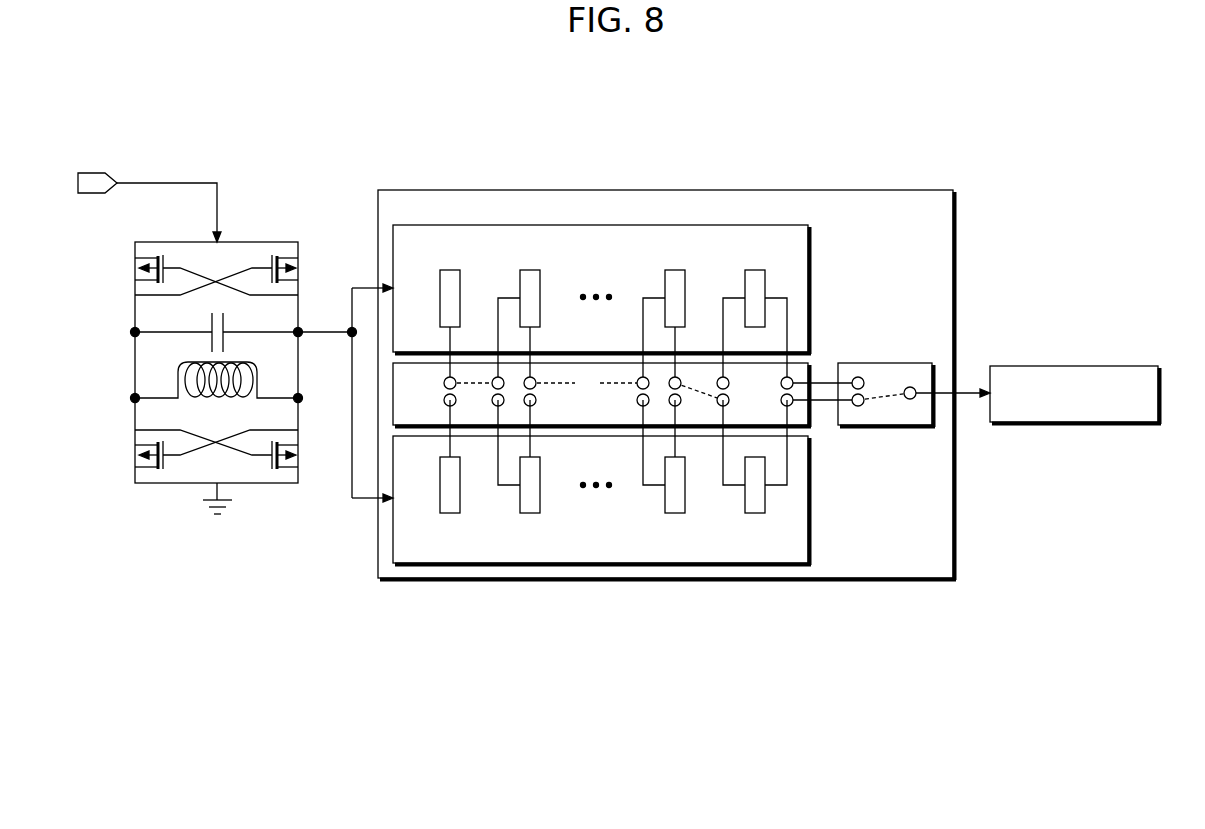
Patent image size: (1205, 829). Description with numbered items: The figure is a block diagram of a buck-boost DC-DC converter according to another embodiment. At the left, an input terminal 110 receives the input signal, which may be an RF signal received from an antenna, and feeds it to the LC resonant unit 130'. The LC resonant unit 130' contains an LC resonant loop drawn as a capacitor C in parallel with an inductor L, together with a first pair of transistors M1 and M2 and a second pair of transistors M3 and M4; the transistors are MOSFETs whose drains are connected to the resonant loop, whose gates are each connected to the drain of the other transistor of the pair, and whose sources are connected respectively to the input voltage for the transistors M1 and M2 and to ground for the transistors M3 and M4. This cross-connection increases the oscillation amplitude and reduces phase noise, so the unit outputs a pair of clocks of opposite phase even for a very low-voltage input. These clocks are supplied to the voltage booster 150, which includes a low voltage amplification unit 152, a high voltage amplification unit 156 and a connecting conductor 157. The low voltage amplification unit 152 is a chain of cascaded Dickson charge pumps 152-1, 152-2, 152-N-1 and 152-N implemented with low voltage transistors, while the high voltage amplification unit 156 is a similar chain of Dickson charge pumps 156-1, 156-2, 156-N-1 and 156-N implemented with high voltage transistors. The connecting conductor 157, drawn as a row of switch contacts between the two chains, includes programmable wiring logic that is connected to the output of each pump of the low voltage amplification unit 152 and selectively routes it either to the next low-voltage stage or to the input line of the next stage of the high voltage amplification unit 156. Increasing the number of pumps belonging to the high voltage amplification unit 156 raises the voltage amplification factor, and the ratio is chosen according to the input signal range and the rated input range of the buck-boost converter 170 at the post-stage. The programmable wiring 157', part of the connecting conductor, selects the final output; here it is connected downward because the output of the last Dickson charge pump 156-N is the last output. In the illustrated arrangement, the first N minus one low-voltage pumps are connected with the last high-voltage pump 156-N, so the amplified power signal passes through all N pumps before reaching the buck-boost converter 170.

The input terminal 110 is at (102, 173).
The LC resonant unit 130' is at (227, 366).
The voltage booster 150 is at (720, 190).
The low voltage amplification unit 152 is at (637, 304).
The Dickson charge pump 152-1 is at (447, 270).
The Dickson charge pump 152-2 is at (527, 270).
The Dickson charge pump 152-N-1 is at (672, 270).
The Dickson charge pump 152-N is at (752, 270).
The high voltage amplification unit 156 is at (637, 482).
The Dickson charge pump 156-1 is at (447, 513).
The Dickson charge pump 156-2 is at (527, 513).
The Dickson charge pump 156-N-1 is at (672, 513).
The Dickson charge pump 156-N is at (752, 513).
The connecting conductor 157 is at (637, 384).
The programmable wiring 157' is at (914, 381).
The buck-boost converter 170 is at (1085, 366).
The transistor M1 is at (198, 275).
The transistor M2 is at (232, 275).
The transistor M3 is at (198, 449).
The transistor M4 is at (232, 449).
The capacitor C is at (244, 330).
The inductor L is at (217, 389).